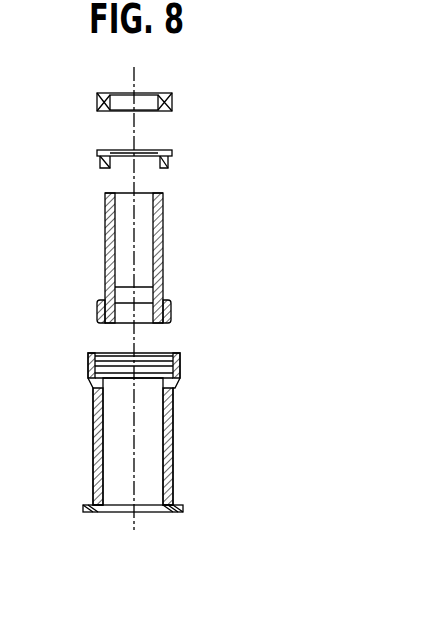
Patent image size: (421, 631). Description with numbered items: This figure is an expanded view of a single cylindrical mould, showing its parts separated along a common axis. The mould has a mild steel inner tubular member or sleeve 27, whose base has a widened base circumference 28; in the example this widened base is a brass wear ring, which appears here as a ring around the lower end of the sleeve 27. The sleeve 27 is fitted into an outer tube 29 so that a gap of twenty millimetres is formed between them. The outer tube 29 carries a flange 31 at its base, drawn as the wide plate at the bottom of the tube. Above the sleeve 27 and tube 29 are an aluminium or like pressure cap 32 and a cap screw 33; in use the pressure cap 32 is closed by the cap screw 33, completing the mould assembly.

The inner tubular member 27 is at (163, 243).
The widened base circumference 28 is at (171, 313).
The outer tube 29 is at (173, 422).
The flange 31 is at (183, 512).
The pressure cap 32 is at (172, 154).
The cap screw 33 is at (172, 104).